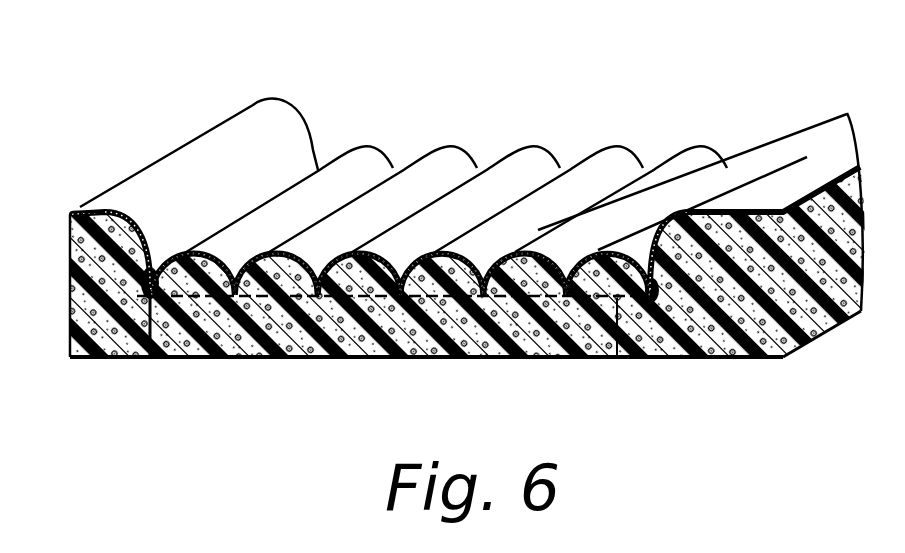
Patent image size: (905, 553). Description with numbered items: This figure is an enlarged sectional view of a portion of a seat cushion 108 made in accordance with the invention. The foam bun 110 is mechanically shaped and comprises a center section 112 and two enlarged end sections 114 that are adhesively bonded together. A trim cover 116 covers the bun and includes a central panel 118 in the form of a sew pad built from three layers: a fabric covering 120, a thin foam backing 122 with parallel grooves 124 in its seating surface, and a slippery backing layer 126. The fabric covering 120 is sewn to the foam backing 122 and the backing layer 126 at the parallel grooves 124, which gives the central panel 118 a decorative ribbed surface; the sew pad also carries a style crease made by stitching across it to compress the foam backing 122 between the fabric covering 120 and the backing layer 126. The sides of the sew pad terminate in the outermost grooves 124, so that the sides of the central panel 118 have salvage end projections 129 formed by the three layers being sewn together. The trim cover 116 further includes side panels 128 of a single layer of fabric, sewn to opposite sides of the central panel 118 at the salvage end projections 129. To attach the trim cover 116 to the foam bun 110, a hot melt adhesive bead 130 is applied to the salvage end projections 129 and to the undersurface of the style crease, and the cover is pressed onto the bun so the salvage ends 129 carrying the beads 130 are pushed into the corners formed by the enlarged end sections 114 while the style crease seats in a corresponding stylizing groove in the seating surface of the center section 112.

The seat cushion 108 is at (262, 96).
The foam bun 110 is at (272, 345).
The center section 112 is at (220, 335).
The enlarged end sections 114 is at (99, 342).
The trim cover 116 is at (305, 135).
The central panel 118 is at (545, 162).
The fabric covering 120 is at (447, 255).
The foam backing 122 is at (425, 345).
The parallel grooves 124 is at (240, 263).
The backing layer 126 is at (325, 340).
The side panels 128 is at (92, 205).
The salvage end projections 129 is at (133, 230).
The hot melt adhesive bead 130 is at (152, 356).